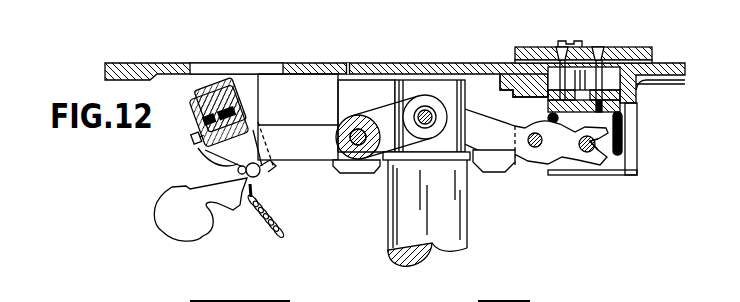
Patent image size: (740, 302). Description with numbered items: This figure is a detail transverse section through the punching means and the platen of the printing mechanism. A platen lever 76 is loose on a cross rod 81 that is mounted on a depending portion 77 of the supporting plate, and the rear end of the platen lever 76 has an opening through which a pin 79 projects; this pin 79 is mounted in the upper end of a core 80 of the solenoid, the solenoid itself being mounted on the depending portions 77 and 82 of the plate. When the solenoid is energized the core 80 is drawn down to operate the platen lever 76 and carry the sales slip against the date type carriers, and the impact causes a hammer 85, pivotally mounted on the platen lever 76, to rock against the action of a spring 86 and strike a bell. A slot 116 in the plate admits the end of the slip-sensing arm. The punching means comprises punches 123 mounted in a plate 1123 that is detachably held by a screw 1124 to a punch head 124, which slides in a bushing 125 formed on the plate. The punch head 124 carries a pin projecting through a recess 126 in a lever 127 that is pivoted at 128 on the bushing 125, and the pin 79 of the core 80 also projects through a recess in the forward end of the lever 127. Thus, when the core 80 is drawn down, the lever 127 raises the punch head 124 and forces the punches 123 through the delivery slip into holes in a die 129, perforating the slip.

The slot 116 is at (353, 66).
The plate 1123 is at (528, 70).
The die 129 is at (656, 54).
The punches 123 is at (513, 105).
The screw 1124 is at (622, 100).
The punch head 124 is at (622, 127).
The bushing 125 is at (633, 160).
The recess 126 is at (600, 167).
The lever 127 is at (541, 153).
The pivot 128 is at (533, 150).
The depending portion 82 is at (502, 160).
The core 80 is at (453, 250).
The pin 79 is at (438, 120).
The cross rod 81 is at (360, 132).
The depending portion 77 is at (370, 163).
The platen lever 76 is at (291, 137).
The hammer 85 is at (197, 240).
The spring 86 is at (285, 231).